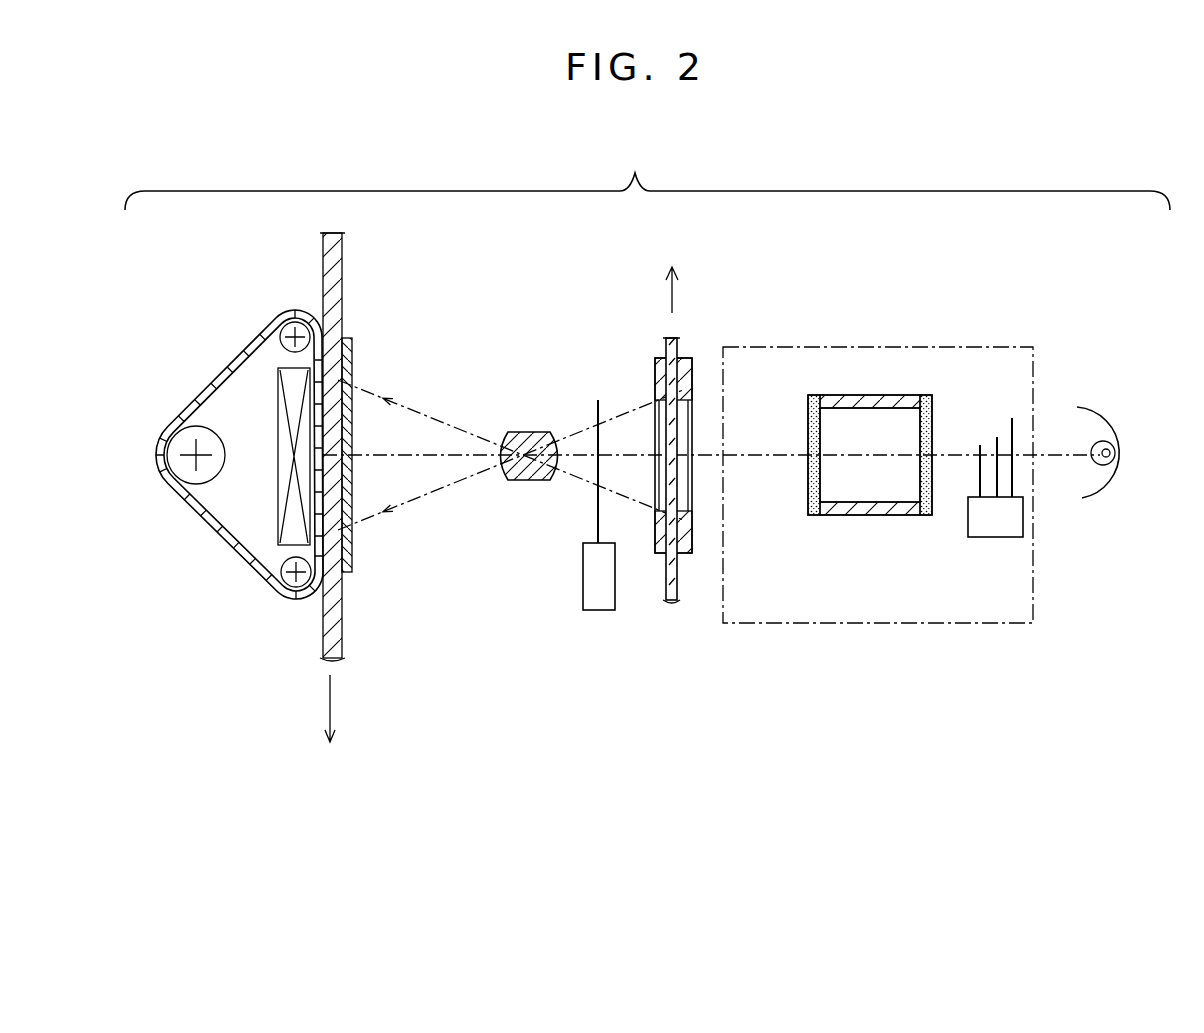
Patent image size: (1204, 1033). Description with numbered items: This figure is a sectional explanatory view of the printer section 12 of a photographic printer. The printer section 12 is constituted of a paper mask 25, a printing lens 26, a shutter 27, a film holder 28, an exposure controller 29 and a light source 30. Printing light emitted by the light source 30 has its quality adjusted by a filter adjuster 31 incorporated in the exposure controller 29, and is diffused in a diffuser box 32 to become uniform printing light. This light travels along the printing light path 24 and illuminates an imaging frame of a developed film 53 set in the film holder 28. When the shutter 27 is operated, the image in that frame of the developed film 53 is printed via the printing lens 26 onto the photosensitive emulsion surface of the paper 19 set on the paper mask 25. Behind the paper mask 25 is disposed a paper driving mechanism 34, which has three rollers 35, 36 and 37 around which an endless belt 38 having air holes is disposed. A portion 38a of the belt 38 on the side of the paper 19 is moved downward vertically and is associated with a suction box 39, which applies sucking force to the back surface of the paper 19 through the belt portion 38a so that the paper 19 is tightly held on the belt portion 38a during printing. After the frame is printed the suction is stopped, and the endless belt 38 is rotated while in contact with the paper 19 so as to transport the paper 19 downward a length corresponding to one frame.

The printer section 12 is at (647, 178).
The paper 19 is at (340, 280).
The printing light path 24 is at (462, 433).
The paper mask 25 is at (353, 548).
The printing lens 26 is at (527, 481).
The shutter 27 is at (583, 578).
The film holder 28 is at (655, 370).
The exposure controller 29 is at (1033, 355).
The light source 30 is at (1110, 490).
The filter adjuster 31 is at (995, 538).
The diffuser box 32 is at (876, 516).
The paper driving mechanism 34 is at (278, 452).
The roller 35 is at (292, 312).
The roller 36 is at (182, 438).
The roller 37 is at (290, 590).
The endless belt 38 is at (237, 360).
The belt portion 38a is at (325, 492).
The suction box 39 is at (264, 456).
The developed film 53 is at (677, 345).